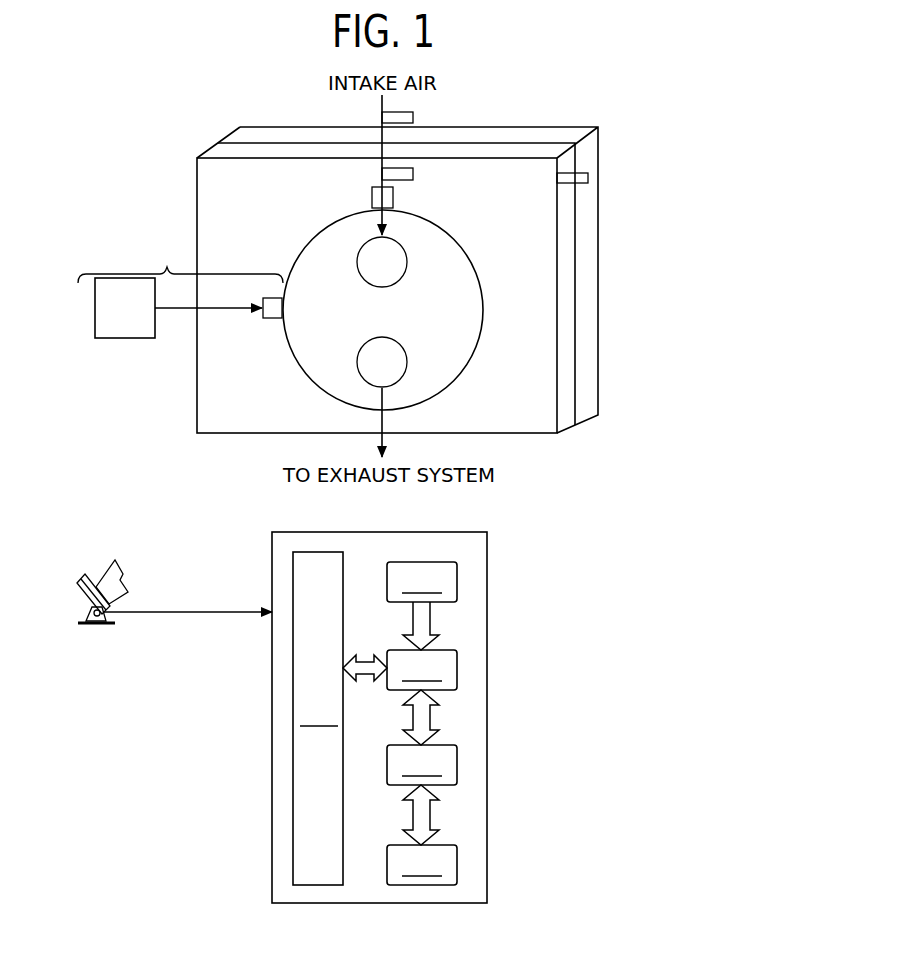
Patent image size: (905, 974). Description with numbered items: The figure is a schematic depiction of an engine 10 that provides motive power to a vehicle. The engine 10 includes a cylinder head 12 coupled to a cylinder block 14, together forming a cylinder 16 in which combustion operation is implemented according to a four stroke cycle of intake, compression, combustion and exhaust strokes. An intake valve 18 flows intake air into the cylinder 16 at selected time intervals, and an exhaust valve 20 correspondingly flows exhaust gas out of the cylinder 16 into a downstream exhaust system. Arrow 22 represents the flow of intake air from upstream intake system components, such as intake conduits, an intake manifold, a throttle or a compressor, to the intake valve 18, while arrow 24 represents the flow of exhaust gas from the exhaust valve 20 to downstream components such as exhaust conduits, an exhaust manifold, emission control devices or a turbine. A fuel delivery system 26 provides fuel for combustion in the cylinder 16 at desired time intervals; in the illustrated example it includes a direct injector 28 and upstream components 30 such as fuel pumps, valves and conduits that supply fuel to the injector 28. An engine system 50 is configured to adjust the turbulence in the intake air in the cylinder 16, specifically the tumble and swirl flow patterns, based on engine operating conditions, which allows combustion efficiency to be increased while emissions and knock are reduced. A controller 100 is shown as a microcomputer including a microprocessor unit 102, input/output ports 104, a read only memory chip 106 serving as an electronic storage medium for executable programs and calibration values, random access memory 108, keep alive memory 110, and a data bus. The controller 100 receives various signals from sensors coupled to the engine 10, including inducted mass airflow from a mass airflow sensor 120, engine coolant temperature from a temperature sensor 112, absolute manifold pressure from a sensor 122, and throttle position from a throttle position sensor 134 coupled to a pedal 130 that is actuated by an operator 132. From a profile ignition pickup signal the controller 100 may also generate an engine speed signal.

The engine 10 is at (828, 142).
The cylinder head 12 is at (567, 270).
The cylinder block 14 is at (585, 244).
The cylinder 16 is at (393, 326).
The intake valve 18 is at (406, 257).
The exhaust valve 20 is at (406, 368).
The arrow 22 is at (382, 103).
The arrow 24 is at (384, 436).
The fuel delivery system 26 is at (180, 274).
The direct injector 28 is at (274, 318).
The upstream components 30 is at (131, 338).
The engine system 50 is at (352, 195).
The controller 100 is at (487, 532).
The microprocessor unit 102 is at (457, 665).
The input/output ports 104 is at (343, 562).
The read only memory chip 106 is at (457, 582).
The random access memory 108 is at (457, 762).
The keep alive memory 110 is at (457, 860).
The temperature sensor 112 is at (588, 178).
The mass airflow sensor 120 is at (413, 118).
The sensor 122 is at (413, 175).
The pedal 130 is at (78, 590).
The operator 132 is at (125, 575).
The throttle position sensor 134 is at (112, 618).